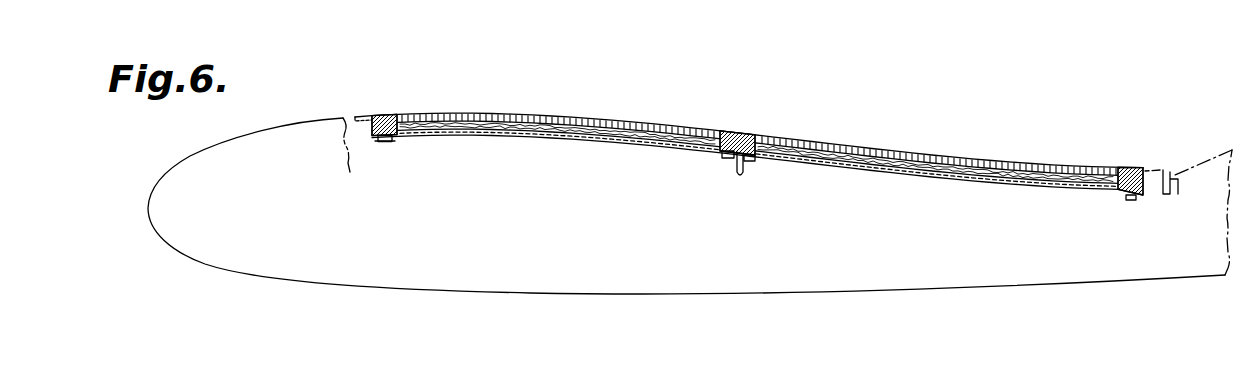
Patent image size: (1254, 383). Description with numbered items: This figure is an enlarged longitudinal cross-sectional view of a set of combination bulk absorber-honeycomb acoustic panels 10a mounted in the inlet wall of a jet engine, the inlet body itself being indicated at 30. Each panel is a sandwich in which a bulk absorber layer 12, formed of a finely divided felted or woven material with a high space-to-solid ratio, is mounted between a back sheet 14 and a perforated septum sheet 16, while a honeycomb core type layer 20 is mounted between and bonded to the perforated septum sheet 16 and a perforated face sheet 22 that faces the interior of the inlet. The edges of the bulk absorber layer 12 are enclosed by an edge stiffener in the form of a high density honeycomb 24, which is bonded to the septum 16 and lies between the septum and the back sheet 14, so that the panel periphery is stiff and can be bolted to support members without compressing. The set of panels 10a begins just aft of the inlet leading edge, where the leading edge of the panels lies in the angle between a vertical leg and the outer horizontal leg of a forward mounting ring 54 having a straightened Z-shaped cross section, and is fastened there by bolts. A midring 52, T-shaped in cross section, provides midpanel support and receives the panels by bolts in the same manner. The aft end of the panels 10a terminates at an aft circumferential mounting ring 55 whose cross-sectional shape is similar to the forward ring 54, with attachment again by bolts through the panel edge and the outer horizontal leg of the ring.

The inlet combination panels 10a is at (518, 109).
The bulk absorber layer 12 is at (592, 136).
The back sheet 14 is at (636, 140).
The perforated septum sheet 16 is at (697, 130).
The honeycomb core type layer 20 is at (646, 124).
The perforated face sheet 22 is at (591, 120).
The high density honeycomb 24 is at (400, 131).
The airfoil body 30 is at (262, 282).
The midring 52 is at (745, 174).
The forward mounting ring 54 is at (372, 137).
The aft circumferential mounting ring 55 is at (1136, 173).